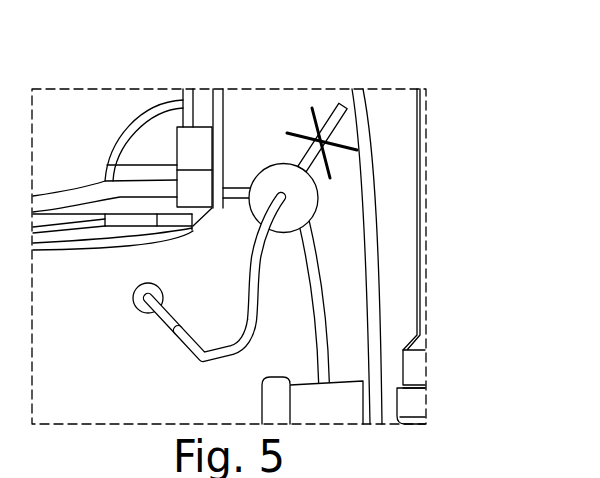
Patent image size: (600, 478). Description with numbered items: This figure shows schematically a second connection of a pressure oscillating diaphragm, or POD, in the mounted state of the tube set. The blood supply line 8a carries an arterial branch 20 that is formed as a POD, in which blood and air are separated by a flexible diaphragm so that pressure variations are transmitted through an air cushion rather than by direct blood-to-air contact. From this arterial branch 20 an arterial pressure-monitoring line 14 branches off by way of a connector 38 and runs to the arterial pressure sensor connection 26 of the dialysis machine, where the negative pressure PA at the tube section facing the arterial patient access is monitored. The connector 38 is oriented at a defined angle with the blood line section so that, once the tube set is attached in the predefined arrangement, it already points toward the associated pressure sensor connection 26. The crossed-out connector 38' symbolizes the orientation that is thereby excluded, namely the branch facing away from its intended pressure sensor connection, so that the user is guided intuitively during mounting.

The crossed-out connector 38' is at (297, 100).
The pressure oscillating diaphragm POD is at (312, 195).
The arterial branch 20 is at (300, 216).
The connector 38 is at (357, 277).
The blood supply line 8a is at (320, 322).
The arterial pressure sensor connection 26 is at (130, 298).
The negative pressure PA is at (138, 338).
The arterial pressure-monitoring line 14 is at (178, 347).